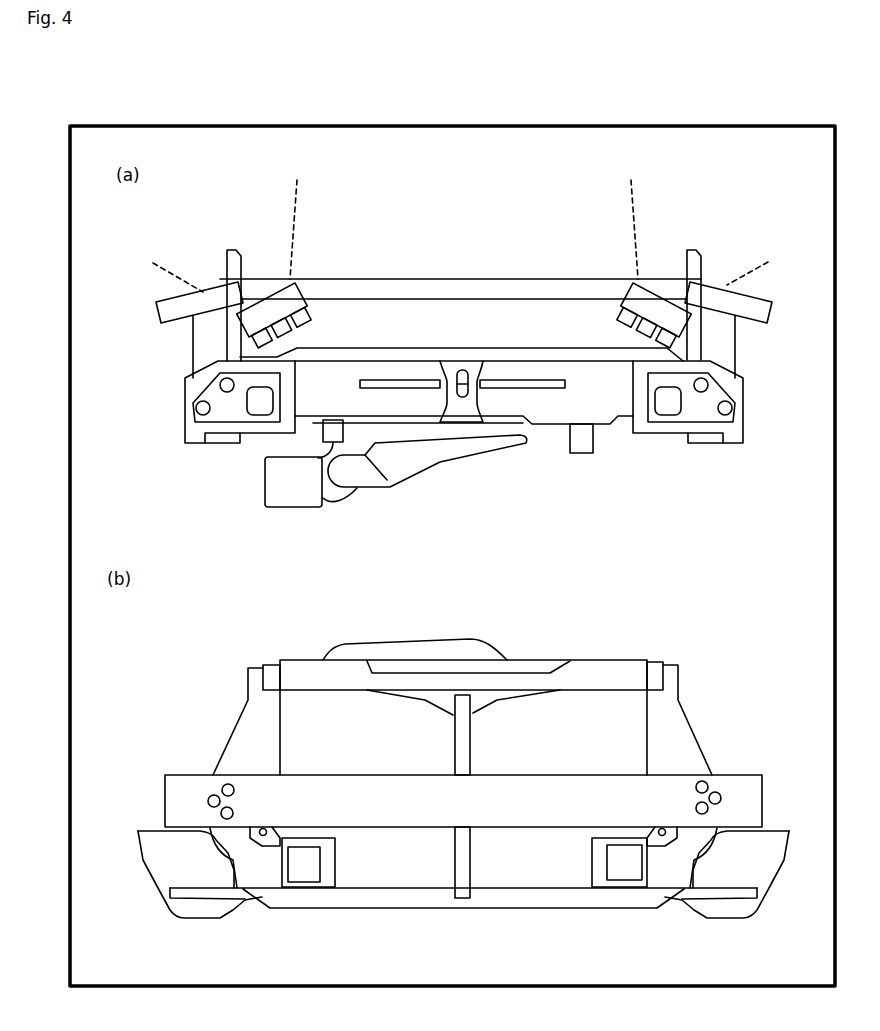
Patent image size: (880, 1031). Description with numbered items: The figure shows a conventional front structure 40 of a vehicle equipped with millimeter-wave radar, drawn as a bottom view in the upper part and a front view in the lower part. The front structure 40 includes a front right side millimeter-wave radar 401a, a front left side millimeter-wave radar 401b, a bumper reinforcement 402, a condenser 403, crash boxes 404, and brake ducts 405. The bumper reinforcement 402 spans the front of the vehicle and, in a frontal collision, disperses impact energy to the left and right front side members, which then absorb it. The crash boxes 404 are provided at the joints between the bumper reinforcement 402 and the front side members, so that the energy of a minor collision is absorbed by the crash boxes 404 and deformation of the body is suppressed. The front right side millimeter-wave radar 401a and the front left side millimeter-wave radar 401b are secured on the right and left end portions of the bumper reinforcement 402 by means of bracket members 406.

The front structure 40 is at (554, 210).
The front right side millimeter-wave radar 401a is at (300, 316).
The front left side millimeter-wave radar 401b is at (627, 317).
The bumper reinforcement 402 is at (452, 285).
The condenser 403 is at (432, 355).
The crash box 404 is at (202, 355).
The brake duct 405 is at (298, 498).
The bracket member 406 is at (223, 303).